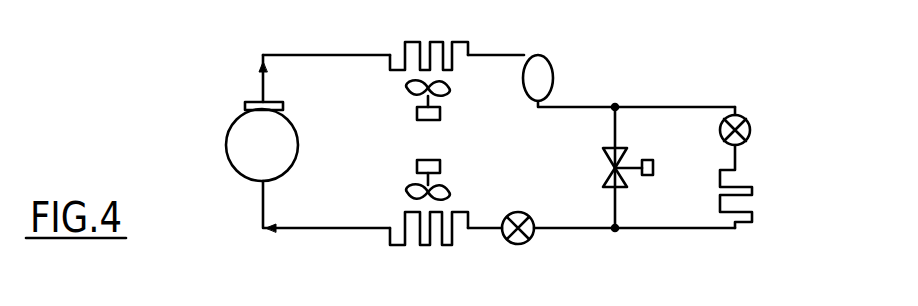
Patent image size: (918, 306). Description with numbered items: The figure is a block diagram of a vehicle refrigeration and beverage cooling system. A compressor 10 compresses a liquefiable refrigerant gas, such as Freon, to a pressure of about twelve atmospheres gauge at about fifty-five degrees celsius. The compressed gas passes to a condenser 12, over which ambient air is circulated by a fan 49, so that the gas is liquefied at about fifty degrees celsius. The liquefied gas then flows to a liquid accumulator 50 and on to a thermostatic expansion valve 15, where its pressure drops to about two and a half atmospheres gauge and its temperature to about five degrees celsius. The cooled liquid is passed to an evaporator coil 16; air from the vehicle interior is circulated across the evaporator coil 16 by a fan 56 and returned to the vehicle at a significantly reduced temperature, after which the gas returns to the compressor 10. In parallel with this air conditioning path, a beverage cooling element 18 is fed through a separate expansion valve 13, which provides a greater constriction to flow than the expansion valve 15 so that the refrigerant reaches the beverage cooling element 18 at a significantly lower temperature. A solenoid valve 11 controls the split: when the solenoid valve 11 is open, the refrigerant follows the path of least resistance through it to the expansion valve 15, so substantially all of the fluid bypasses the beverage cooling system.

The compressor 10 is at (226, 150).
The condenser 12 is at (438, 42).
The fan 49 is at (440, 113).
The fan 56 is at (440, 163).
The evaporator coil 16 is at (421, 245).
The expansion valve 15 is at (529, 241).
The liquid accumulator 50 is at (553, 80).
The solenoid valve 11 is at (618, 166).
The expansion valve 13 is at (748, 122).
The beverage cooling element 18 is at (752, 200).